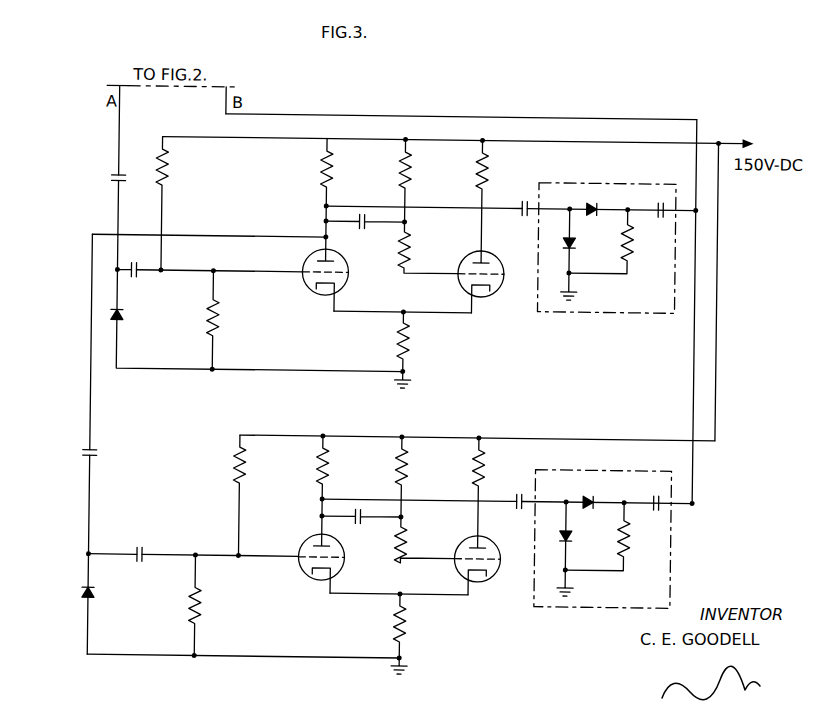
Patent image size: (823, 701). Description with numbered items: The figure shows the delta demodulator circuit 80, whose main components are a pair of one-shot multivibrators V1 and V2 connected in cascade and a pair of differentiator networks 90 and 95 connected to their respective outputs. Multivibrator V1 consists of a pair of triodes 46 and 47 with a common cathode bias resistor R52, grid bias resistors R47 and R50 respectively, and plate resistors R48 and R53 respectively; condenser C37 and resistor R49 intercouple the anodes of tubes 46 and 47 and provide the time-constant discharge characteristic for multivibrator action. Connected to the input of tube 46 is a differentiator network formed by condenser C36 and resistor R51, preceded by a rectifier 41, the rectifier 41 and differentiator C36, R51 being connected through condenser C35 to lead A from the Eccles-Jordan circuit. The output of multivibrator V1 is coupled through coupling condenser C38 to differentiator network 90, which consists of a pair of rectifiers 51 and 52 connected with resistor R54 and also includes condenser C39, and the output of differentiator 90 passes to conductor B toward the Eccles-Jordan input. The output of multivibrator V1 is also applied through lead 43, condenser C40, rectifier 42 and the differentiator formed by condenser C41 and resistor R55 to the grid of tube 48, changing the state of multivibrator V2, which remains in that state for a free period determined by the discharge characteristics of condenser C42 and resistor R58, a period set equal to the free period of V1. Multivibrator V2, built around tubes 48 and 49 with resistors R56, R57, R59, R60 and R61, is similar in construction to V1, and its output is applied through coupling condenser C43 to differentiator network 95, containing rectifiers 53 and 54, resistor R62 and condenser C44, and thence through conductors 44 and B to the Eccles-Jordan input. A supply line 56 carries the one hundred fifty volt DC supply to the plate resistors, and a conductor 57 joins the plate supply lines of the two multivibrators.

The rectifier 41 is at (124, 320).
The rectifier 42 is at (84, 596).
The lead 43 is at (91, 374).
The conductor 44 is at (694, 369).
The triode 46 is at (303, 283).
The triode 47 is at (496, 292).
The tube 48 is at (302, 566).
The triode 49 is at (490, 578).
The rectifier 51 is at (573, 246).
The rectifier 52 is at (590, 216).
The rectifier 53 is at (572, 540).
The rectifier 54 is at (586, 510).
The supply conductor (150V-DC) 56 is at (598, 142).
The conductor 57 is at (716, 271).
The delta demodulator circuit 80 is at (426, 105).
The differentiator network 90 is at (626, 301).
The differentiator network 95 is at (622, 596).
The condenser C35 is at (108, 180).
The condenser C36 is at (133, 282).
The condenser C37 is at (362, 214).
The coupling condenser C38 is at (525, 218).
The capacitor C39 is at (662, 198).
The condenser C40 is at (85, 452).
The condenser C41 is at (145, 548).
The condenser C42 is at (362, 508).
The capacitor C43 is at (521, 510).
The capacitor C44 is at (654, 492).
The grid bias resistor R47 is at (172, 178).
The plate resistor R48 is at (318, 173).
The resistor R49 is at (409, 180).
The grid bias resistor R50 is at (410, 248).
The resistor R51 is at (218, 332).
The common cathode bias resistor R52 is at (408, 350).
The plate resistor R53 is at (488, 178).
The resistor R54 is at (632, 247).
The resistor R55 is at (205, 610).
The resistor R56 is at (235, 466).
The resistor R57 is at (318, 468).
The resistor R58 is at (406, 468).
The resistor R59 is at (485, 467).
The resistor R60 is at (406, 534).
The resistor R61 is at (408, 632).
The resistor R62 is at (630, 553).
The one-shot multivibrator V1 is at (412, 304).
The one-shot multivibrator V2 is at (412, 586).